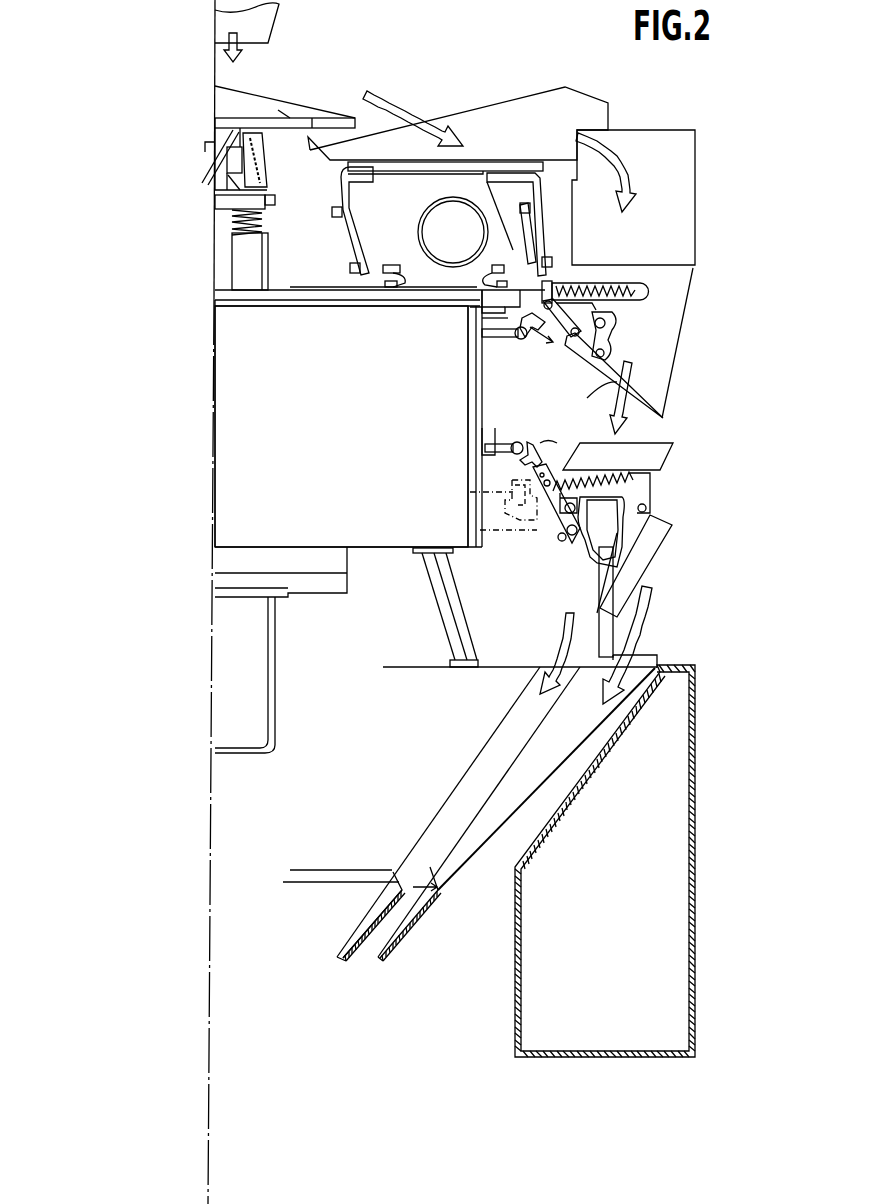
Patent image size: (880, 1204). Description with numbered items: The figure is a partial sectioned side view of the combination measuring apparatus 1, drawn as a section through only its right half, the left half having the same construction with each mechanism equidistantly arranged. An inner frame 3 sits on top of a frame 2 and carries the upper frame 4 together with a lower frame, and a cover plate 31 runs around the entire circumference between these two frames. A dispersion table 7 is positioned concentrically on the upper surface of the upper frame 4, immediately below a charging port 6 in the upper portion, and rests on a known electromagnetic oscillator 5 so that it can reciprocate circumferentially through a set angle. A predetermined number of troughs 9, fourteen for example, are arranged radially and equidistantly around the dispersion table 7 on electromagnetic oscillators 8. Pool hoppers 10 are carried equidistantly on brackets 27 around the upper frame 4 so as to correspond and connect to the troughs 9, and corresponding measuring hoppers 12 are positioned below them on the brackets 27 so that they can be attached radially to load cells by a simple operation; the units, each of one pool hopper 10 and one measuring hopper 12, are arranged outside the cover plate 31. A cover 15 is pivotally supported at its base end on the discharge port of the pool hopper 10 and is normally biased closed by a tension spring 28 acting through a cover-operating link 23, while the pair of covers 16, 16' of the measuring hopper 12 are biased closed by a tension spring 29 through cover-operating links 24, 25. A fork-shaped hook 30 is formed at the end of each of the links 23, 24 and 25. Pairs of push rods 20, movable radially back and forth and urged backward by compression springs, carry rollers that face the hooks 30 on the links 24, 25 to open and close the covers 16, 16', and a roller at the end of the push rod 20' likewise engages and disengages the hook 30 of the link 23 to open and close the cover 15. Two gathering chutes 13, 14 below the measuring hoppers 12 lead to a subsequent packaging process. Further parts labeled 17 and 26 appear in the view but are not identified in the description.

The combination measuring apparatus 1 is at (150, 210).
The frame 2 is at (692, 713).
The inner frame 3 is at (453, 618).
The upper frame 4 is at (250, 298).
The electromagnetic oscillator 5 is at (238, 160).
The charging port 6 is at (262, 25).
The dispersion table 7 is at (283, 96).
The electromagnetic oscillators 8 is at (385, 230).
The troughs 9 is at (530, 112).
The pool hopper 10 is at (665, 312).
The measuring hopper 12 is at (603, 535).
The gathering chute 13 is at (368, 921).
The gathering chute 14 is at (418, 917).
The cover 15 is at (665, 394).
The cover 16 is at (658, 566).
The cover 16' is at (574, 618).
The side bracket 17 is at (237, 712).
The push rods 20 is at (468, 436).
The push rod 20' is at (466, 341).
The cover-operating link 23 is at (572, 341).
The cover-operating link 24 is at (503, 520).
The cover-operating link 25 is at (537, 532).
The actuating rod 26 is at (505, 324).
The brackets 27 is at (500, 504).
The tension spring 28 is at (612, 283).
The tension spring 29 is at (620, 480).
The fork-shaped hook 30 is at (536, 345).
The cover plate 31 is at (242, 491).